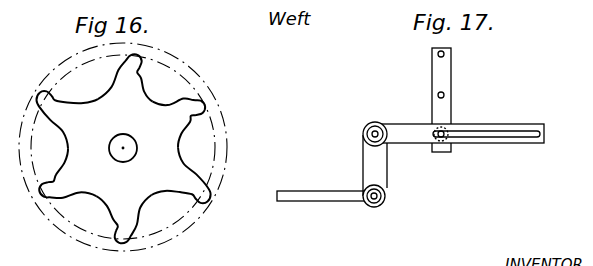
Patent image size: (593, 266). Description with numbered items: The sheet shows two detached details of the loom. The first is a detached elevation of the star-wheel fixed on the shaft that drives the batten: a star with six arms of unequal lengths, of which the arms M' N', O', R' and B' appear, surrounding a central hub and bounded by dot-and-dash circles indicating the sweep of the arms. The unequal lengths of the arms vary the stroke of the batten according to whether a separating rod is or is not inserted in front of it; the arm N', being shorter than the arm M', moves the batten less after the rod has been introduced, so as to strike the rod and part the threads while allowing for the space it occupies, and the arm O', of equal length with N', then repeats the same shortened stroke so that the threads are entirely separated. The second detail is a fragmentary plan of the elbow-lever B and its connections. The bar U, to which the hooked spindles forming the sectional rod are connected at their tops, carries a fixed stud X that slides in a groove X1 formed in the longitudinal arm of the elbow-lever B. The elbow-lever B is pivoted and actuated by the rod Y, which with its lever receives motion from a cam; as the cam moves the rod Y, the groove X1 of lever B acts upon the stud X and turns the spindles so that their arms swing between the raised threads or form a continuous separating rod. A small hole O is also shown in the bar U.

In FIG. 16, the arm of the star N' is at (125, 77).
In FIG. 16, the arm of the star O' is at (150, 170).
In FIG. 16, the tooth of star wheel B' is at (182, 175).
In FIG. 16, the arm of the star R' is at (67, 173).
In FIG. 16, the arm of the star M' is at (65, 119).
In FIG. 17, the bar U is at (433, 76).
In FIG. 17, the pin hole O is at (459, 85).
In FIG. 17, the elbow-lever B is at (461, 123).
In FIG. 17, the stud X is at (443, 138).
In FIG. 17, the groove X1 is at (504, 138).
In FIG. 17, the rod Y is at (326, 186).